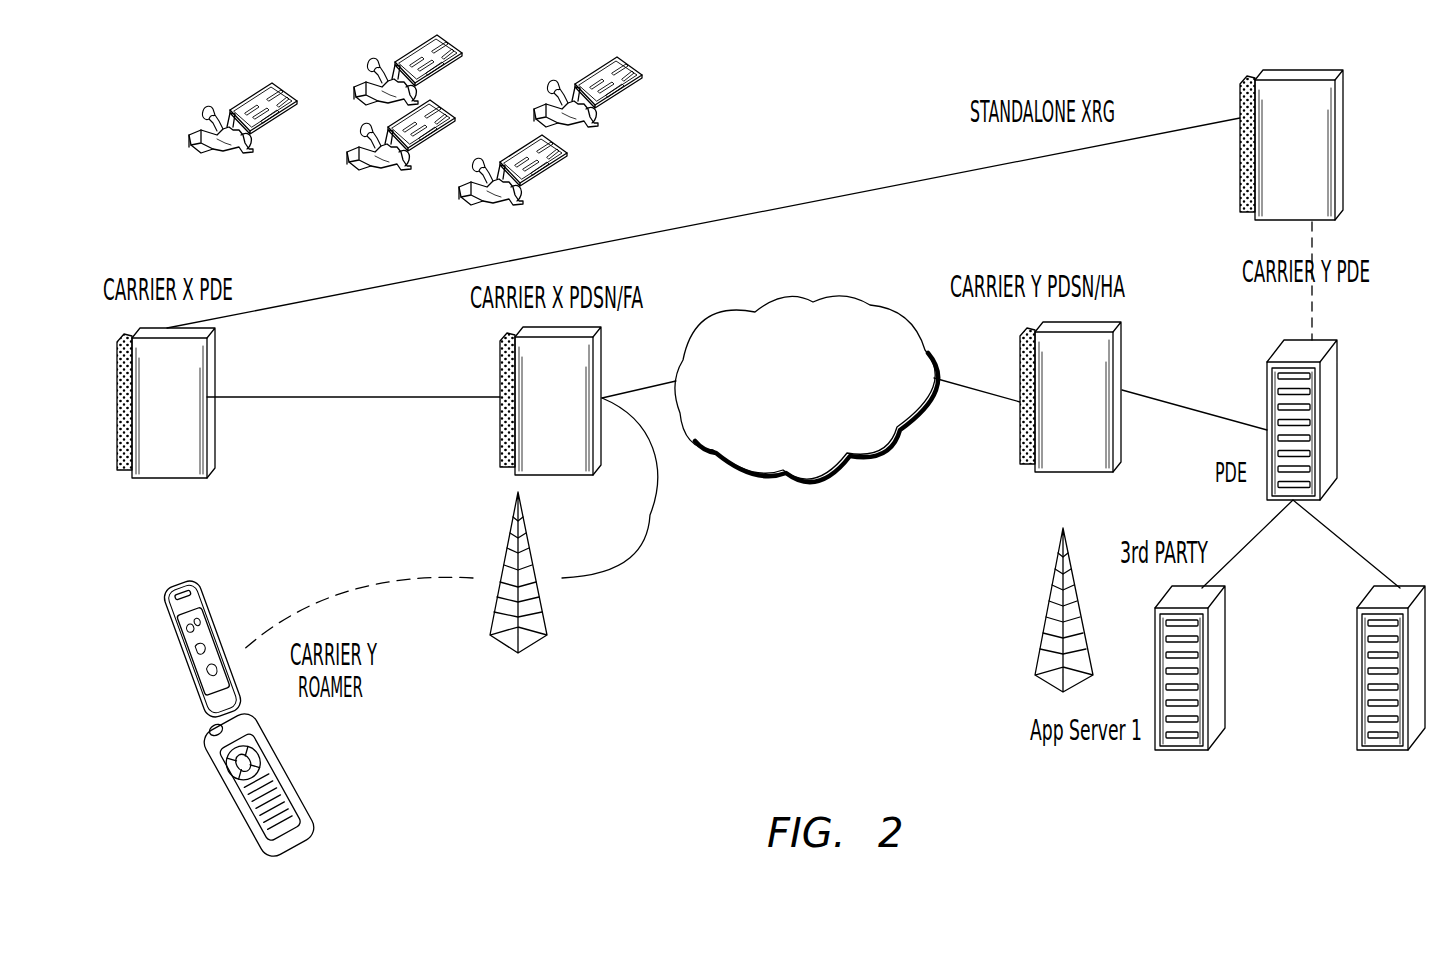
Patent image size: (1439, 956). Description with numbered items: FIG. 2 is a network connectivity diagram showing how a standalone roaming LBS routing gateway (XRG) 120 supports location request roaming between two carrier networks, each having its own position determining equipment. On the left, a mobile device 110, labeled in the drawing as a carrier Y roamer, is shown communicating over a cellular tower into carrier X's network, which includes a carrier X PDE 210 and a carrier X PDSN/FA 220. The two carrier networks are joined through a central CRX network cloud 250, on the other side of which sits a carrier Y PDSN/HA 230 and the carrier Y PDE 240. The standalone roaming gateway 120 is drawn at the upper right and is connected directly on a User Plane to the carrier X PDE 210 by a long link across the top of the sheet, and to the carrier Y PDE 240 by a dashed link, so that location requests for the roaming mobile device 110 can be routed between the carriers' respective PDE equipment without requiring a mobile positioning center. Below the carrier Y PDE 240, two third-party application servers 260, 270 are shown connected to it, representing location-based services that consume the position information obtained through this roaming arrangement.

The mobile device 110 is at (243, 827).
The roaming gateway 120 is at (1240, 172).
The carrier X PDE 210 is at (218, 442).
The carrier X PDSN/FA 220 is at (500, 438).
The carrier Y PDSN/HA 230 is at (1020, 450).
The carrier Y PDE 240 is at (1338, 400).
The CRX network 250 is at (800, 487).
The 3rd party app server 1 260 is at (1227, 627).
The 3rd party app server 270 is at (1355, 720).